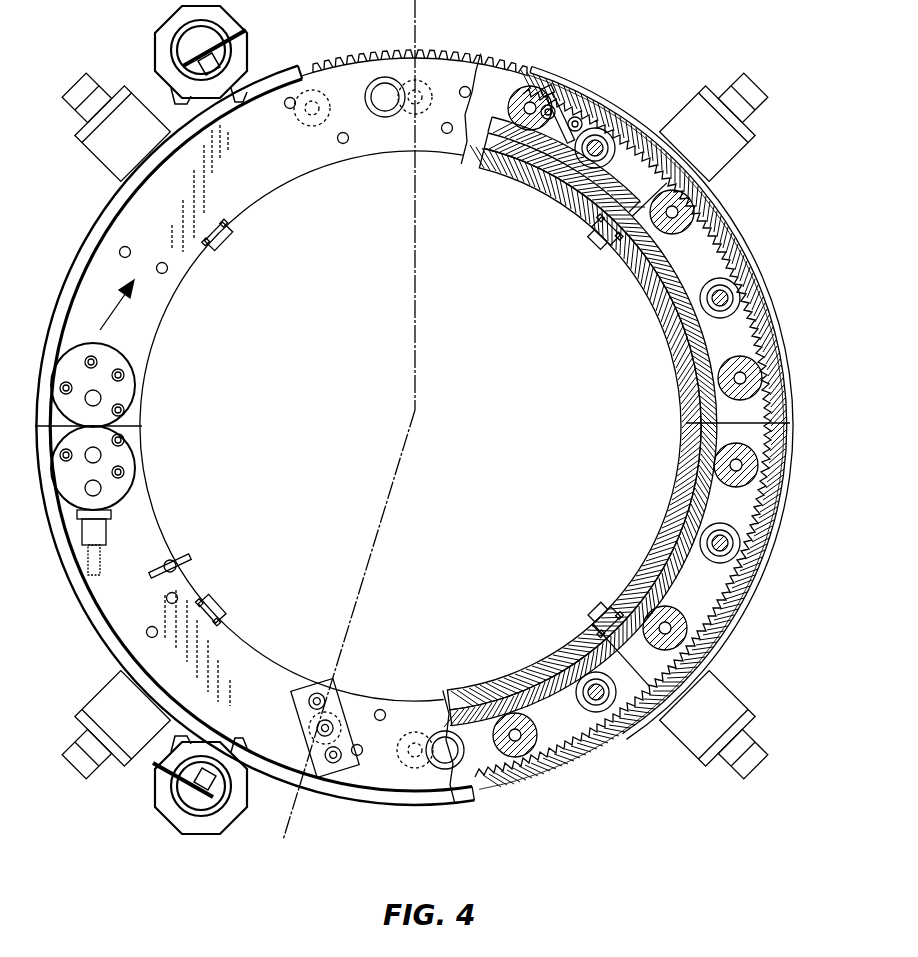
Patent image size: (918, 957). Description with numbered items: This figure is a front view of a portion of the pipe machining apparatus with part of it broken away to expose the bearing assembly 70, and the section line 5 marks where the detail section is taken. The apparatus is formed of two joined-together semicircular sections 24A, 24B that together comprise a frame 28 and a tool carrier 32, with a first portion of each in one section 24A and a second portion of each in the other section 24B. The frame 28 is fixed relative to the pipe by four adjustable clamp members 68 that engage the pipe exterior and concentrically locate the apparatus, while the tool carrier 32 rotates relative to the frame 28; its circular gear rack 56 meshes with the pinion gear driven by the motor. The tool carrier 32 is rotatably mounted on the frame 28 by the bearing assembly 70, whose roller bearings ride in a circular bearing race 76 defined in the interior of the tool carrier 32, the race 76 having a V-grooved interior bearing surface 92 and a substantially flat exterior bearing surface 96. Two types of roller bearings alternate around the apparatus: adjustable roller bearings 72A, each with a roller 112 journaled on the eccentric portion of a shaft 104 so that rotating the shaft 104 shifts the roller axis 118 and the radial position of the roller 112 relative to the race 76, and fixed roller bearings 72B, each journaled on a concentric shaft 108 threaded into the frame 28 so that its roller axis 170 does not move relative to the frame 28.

The section line 5- 5 is at (428, 12).
The semicircular section 24A is at (752, 216).
The semicircular section 24B is at (76, 636).
The frame 28 is at (56, 540).
The tool carrier 32 is at (106, 268).
The circular gear rack 56 is at (506, 72).
The clamp member 68 is at (240, 260).
The bearing assembly 70 is at (640, 182).
The adjustable roller bearing 72A is at (688, 346).
The fixed roller bearing 72B is at (560, 145).
The circular bearing race 76 is at (706, 506).
The interior bearing surface 92 is at (672, 290).
The exterior bearing surface 96 is at (760, 528).
The shaft 104 is at (725, 205).
The shaft 108 is at (770, 302).
The roller 112 is at (560, 120).
The roller axis 118 is at (745, 462).
The roller axis 170 is at (602, 132).